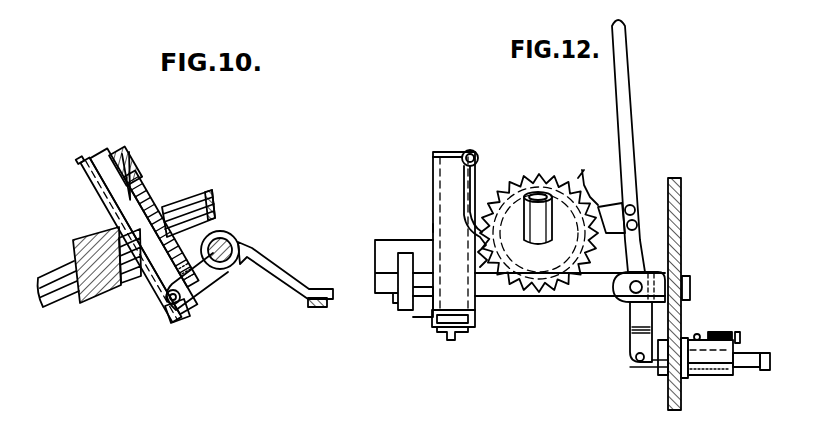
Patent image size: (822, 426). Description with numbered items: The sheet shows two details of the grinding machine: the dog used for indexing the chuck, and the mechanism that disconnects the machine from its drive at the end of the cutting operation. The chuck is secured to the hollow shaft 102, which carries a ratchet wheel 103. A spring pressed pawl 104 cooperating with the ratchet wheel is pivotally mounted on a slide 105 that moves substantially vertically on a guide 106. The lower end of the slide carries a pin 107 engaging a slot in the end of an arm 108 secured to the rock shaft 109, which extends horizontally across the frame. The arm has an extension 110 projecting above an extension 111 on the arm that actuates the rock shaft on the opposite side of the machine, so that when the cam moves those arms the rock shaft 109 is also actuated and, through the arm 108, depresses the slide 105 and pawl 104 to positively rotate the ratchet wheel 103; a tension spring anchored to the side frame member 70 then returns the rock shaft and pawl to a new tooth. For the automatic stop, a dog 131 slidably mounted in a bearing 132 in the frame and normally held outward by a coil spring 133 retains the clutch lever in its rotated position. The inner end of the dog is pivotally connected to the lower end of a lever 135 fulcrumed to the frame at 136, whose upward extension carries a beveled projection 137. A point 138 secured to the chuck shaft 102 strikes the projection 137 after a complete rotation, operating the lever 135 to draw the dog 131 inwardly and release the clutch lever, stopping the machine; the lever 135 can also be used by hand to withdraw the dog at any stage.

In FIG. 12, the side frame member 70 is at (682, 226).
In FIG. 10, the hollow shaft 102 is at (213, 197).
In FIG. 12, the hollow shaft 102 is at (527, 188).
In FIG. 10, the ratchet wheel 103 is at (142, 183).
In FIG. 12, the ratchet wheel 103 is at (536, 270).
In FIG. 10, the spring pressed pawl 104 is at (166, 184).
In FIG. 12, the spring pressed pawl 104 is at (462, 206).
In FIG. 10, the slide 105 is at (188, 312).
In FIG. 12, the slide 105 is at (440, 228).
In FIG. 12, the guide 106 is at (450, 336).
In FIG. 10, the pin 107 is at (160, 320).
In FIG. 10, the arm 108 is at (204, 278).
In FIG. 10, the rock shaft 109 is at (234, 237).
In FIG. 10, the extension 110 is at (293, 282).
In FIG. 10, the extension 111 is at (318, 308).
In FIG. 12, the dog 131 is at (748, 370).
In FIG. 12, the bearing 132 is at (710, 372).
In FIG. 12, the coil spring 133 is at (712, 333).
In FIG. 12, the lever 135 is at (628, 118).
In FIG. 12, the fulcrum 136 is at (630, 290).
In FIG. 12, the beveled projection 137 is at (607, 204).
In FIG. 12, the point 138 is at (584, 172).